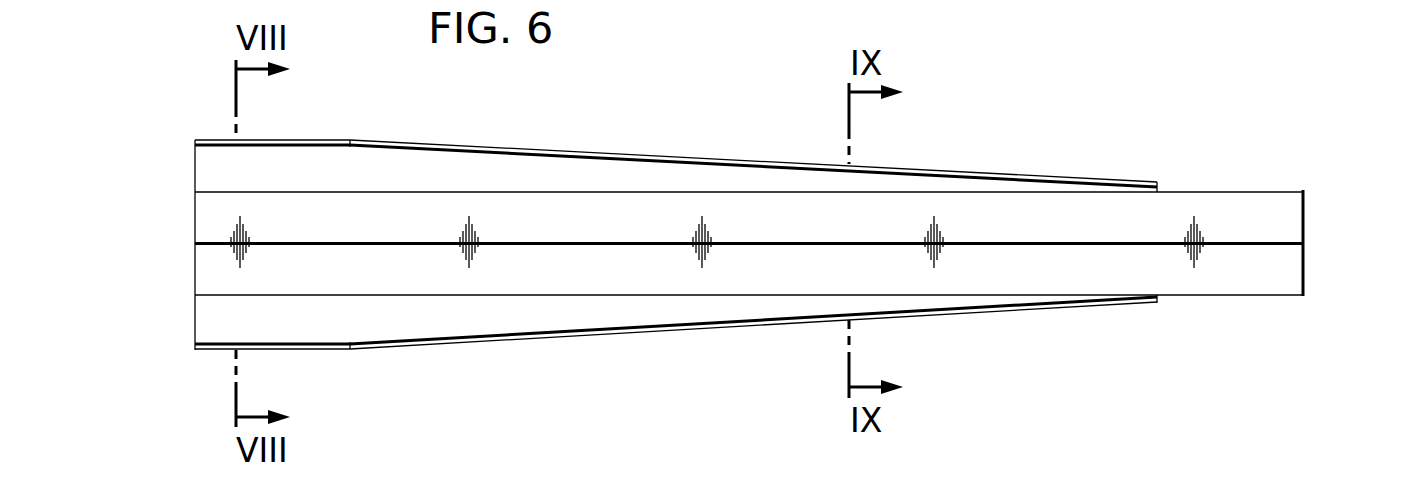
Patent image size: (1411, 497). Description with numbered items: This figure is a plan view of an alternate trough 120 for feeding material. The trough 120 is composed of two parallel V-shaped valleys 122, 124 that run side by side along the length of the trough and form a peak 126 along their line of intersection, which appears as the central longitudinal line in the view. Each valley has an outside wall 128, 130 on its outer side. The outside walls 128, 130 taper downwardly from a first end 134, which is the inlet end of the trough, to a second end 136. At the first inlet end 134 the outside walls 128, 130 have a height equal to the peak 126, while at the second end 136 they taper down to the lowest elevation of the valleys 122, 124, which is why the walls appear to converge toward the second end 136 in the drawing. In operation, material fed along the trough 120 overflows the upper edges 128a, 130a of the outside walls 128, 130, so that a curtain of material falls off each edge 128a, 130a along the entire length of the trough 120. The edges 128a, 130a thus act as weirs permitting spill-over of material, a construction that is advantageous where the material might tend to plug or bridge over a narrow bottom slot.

The alternate trough 120 is at (636, 94).
The V-shaped valley 122 is at (312, 158).
The V-shaped valley 124 is at (312, 330).
The peak 126 is at (332, 243).
The outside wall 128 is at (668, 176).
The upper edge 128a is at (733, 160).
The outside wall 130 is at (512, 320).
The upper edge 130a is at (612, 333).
The first end 134 is at (195, 172).
The second end 136 is at (1303, 217).